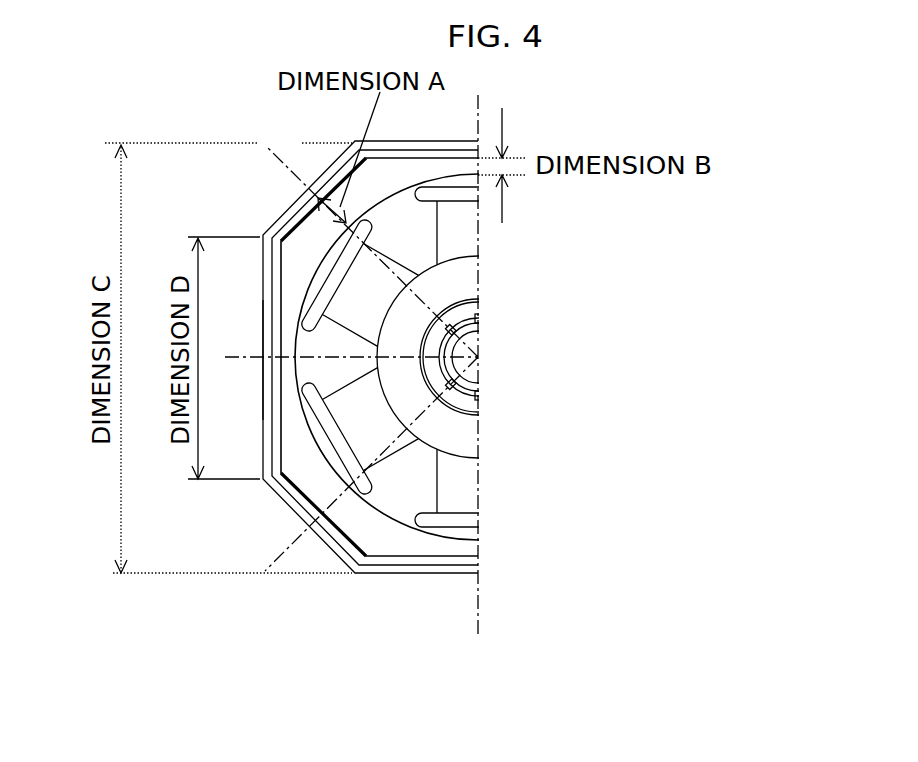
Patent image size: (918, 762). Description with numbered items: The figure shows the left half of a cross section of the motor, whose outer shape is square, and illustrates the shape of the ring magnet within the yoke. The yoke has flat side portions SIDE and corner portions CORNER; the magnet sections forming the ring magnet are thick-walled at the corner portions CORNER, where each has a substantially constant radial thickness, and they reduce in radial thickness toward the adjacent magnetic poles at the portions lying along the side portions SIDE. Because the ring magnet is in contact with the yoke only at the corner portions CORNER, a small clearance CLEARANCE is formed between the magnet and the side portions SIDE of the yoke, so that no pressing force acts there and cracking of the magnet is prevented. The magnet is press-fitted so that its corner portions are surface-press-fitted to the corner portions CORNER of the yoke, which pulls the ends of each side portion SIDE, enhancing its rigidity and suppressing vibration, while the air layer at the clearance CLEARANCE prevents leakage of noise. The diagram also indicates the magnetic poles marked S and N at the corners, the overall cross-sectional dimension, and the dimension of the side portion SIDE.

The S pole magnet S is at (284, 128).
The N pole magnet N is at (275, 589).
The side portion SIDE is at (254, 436).
The corner portion CORNER is at (315, 568).
The clearance CLEARANCE is at (496, 562).